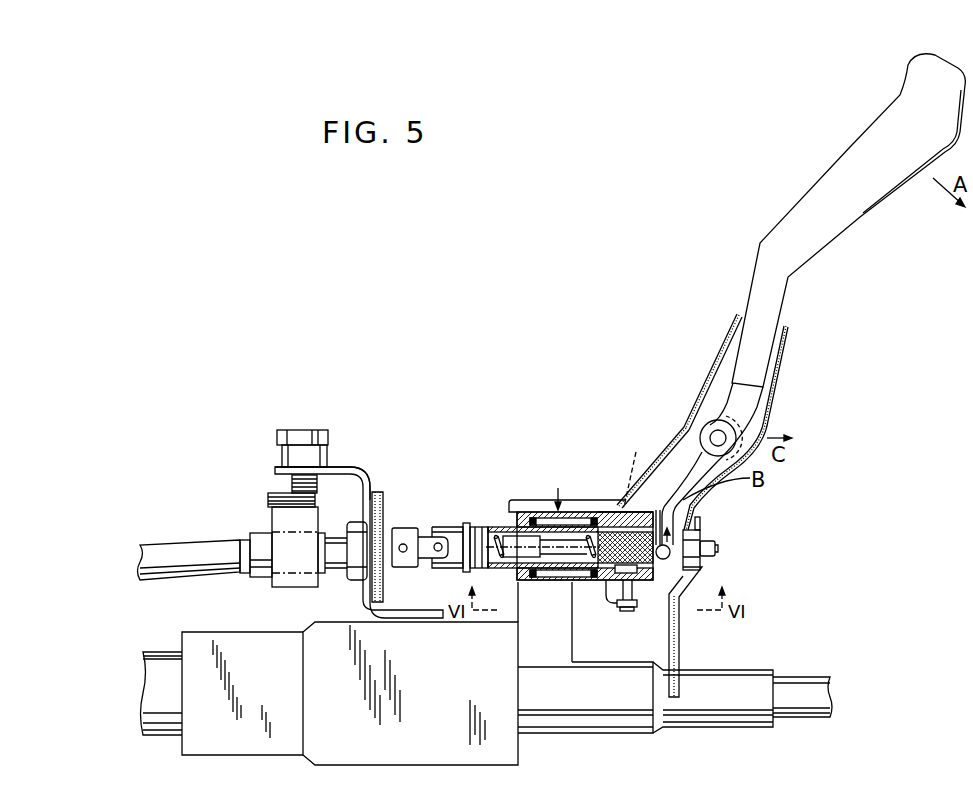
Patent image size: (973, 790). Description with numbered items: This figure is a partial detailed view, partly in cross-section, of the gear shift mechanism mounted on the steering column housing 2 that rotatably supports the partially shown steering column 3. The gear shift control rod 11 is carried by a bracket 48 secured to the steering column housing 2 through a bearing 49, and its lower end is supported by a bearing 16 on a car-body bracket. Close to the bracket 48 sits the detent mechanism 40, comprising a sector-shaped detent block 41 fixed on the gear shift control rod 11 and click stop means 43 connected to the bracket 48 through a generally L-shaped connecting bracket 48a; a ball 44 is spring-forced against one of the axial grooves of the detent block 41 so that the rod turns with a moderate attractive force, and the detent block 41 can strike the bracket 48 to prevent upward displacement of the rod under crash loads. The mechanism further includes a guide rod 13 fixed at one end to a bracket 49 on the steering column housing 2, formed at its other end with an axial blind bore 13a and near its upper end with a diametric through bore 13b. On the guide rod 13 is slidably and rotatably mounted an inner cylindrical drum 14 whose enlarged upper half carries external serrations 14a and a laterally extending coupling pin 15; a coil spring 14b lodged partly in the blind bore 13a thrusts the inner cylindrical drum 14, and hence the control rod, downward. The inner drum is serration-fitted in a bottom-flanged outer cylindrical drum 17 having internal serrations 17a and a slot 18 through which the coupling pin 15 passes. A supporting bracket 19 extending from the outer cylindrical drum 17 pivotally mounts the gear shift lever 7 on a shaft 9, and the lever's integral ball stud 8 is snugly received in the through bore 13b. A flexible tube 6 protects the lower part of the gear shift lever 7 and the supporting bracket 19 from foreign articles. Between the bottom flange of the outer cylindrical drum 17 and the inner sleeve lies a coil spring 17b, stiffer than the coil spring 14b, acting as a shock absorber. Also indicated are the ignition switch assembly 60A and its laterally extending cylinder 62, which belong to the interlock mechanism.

The steering column housing 2 is at (508, 748).
The steering column 3 is at (797, 673).
The flexible tube 6 is at (768, 387).
The gear shift lever 7 is at (755, 287).
The ball stud 8 is at (664, 560).
The shaft 9 is at (716, 432).
The gear shift control rod 11 is at (175, 548).
The guide rod 13 is at (608, 562).
The blind bore 13a is at (552, 558).
The diametric through bore 13b is at (695, 520).
The inner cylindrical drum 14 is at (502, 527).
The external serrations 14a is at (613, 508).
The coil spring 14b is at (490, 528).
The coupling pin 15 is at (627, 612).
The bearing 16 is at (403, 528).
The outer cylindrical drum 17 is at (523, 510).
The internal serrations 17a is at (646, 469).
The coil spring 17b is at (595, 518).
The slot 18 is at (611, 605).
The supporting bracket 19 is at (680, 447).
The detent mechanism 40 is at (259, 486).
The detent block 41 is at (287, 583).
The click stop means 43 is at (327, 455).
The ball 44 is at (314, 492).
The bracket 48 is at (372, 600).
The connecting bracket 48a is at (350, 470).
The bearing 49 is at (703, 567).
The ignition switch assembly 60A is at (568, 474).
The laterally extending cylinder 62 is at (533, 642).